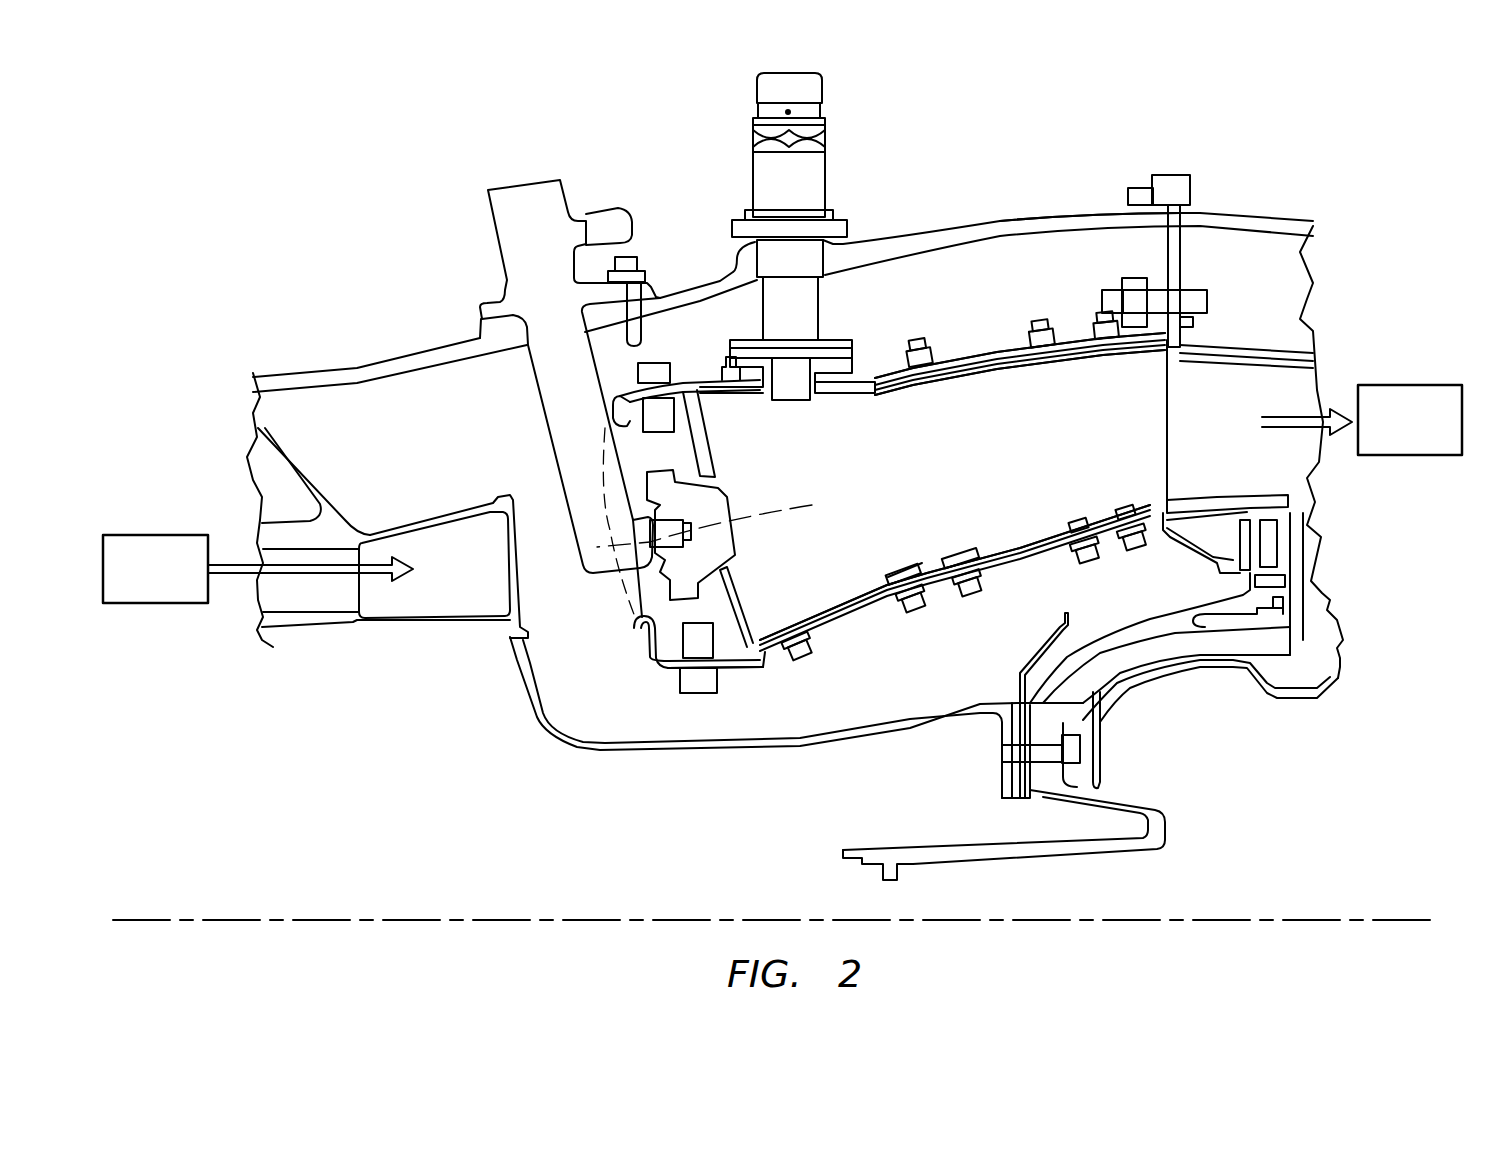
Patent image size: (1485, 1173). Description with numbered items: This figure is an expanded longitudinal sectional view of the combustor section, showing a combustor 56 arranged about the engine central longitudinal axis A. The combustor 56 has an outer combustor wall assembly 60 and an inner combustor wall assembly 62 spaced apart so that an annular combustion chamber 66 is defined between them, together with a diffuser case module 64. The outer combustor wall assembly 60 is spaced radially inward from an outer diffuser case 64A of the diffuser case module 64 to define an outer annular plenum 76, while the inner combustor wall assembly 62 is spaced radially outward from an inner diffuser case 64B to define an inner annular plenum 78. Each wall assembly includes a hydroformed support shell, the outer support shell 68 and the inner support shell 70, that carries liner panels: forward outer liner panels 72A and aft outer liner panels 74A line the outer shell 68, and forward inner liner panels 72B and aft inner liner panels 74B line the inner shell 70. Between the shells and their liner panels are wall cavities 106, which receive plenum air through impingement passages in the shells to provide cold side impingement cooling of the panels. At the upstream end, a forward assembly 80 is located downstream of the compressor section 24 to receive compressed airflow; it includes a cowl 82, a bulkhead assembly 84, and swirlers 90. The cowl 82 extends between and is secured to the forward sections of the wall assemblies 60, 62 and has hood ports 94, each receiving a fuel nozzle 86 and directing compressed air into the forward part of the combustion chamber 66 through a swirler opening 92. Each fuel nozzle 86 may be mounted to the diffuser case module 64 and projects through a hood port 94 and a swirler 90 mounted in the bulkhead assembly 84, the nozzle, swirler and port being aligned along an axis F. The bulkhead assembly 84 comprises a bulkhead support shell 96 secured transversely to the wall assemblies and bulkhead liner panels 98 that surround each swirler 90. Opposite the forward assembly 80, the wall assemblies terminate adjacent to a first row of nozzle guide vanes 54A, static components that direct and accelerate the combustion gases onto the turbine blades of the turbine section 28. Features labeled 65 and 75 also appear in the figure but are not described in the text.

The compressor section 24 is at (139, 589).
The turbine section 28 is at (1392, 439).
The nozzle guide vanes 54A is at (1198, 443).
The combustor 56 is at (1155, 140).
The outer combustor wall assembly 60 is at (1012, 349).
The inner combustor wall assembly 62 is at (938, 616).
The diffuser case module 64 is at (995, 216).
The outer diffuser case 64A is at (905, 237).
The inner diffuser case 64B is at (830, 752).
The case flange 65 is at (1090, 217).
The annular combustion chamber 66 is at (922, 487).
The outer support shell 68 is at (955, 358).
The inner support shell 70 is at (1042, 560).
The forward outer liner panels 72A is at (835, 397).
The forward inner liner panels 72B is at (888, 576).
The aft outer liner panels 74A is at (1025, 378).
The aft inner liner panels 74B is at (1043, 522).
The vane platform 75 is at (1130, 553).
The outer annular plenum 76 is at (872, 308).
The inner annular plenum 78 is at (832, 711).
The forward assembly 80 is at (638, 682).
The cowl 82 is at (645, 635).
The bulkhead assembly 84 is at (724, 439).
The fuel nozzles 86 is at (525, 292).
The swirlers 90 is at (738, 560).
The swirler opening 92 is at (722, 497).
The hood port 94 is at (625, 615).
The bulkhead support shell 96 is at (640, 668).
The bulkhead liner panels 98 is at (745, 603).
The wall cavities 106 is at (1006, 350).
The axis F is at (717, 522).
The engine central longitudinal axis A is at (1411, 917).